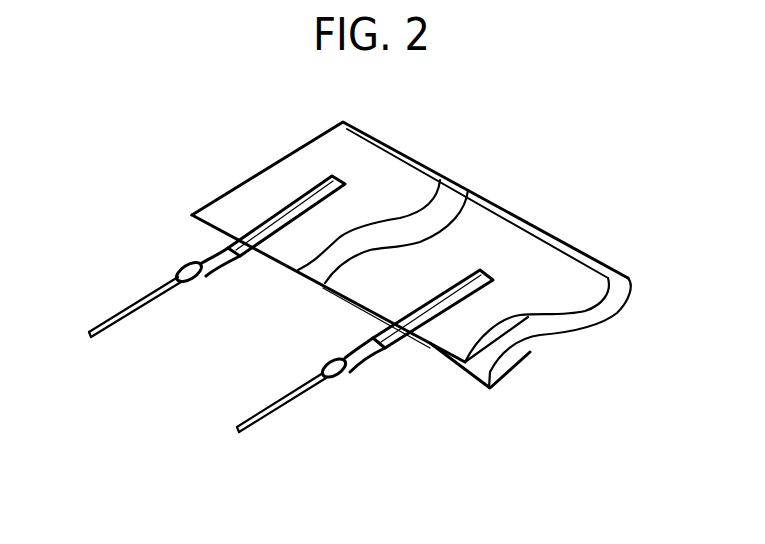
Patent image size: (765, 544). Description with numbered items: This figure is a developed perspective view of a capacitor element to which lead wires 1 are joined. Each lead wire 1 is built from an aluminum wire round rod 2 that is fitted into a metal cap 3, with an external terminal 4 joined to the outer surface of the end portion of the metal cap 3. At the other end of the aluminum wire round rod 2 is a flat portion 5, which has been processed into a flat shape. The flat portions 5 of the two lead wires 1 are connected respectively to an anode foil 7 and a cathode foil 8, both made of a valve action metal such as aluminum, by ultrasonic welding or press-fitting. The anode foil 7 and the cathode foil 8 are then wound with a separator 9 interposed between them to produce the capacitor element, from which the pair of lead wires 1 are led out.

The lead wire 1 is at (409, 392).
The aluminum wire round rod 2 is at (355, 355).
The metal cap 3 is at (346, 374).
The external terminal 4 is at (304, 394).
The flat portion 5 is at (447, 323).
The anode foil 7 is at (518, 243).
The cathode foil 8 is at (398, 172).
The separator 9 is at (453, 198).